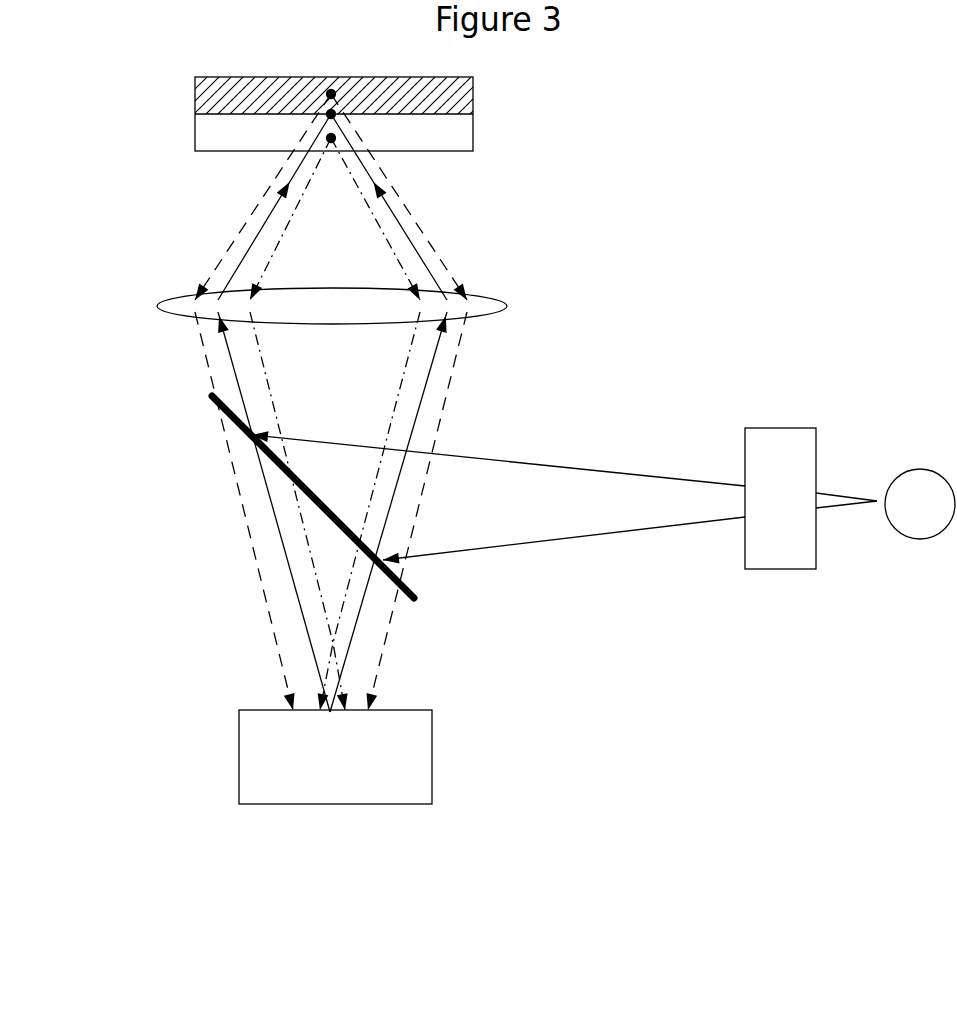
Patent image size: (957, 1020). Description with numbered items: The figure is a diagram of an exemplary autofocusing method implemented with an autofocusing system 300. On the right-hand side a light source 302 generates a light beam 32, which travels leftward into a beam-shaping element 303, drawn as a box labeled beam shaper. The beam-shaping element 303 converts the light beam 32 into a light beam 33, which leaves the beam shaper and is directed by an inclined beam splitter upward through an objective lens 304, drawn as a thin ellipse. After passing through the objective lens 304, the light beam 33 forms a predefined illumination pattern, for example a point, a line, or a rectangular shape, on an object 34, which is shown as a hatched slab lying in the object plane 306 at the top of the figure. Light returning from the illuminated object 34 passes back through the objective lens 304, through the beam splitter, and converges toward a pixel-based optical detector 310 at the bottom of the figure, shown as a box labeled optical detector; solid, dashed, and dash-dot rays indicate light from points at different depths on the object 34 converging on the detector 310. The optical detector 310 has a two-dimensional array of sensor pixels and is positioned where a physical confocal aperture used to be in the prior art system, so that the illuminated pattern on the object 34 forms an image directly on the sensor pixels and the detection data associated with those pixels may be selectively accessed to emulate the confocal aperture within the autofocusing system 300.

The autofocusing system 300 is at (796, 263).
The light source 302 is at (920, 547).
The beam-shaping element 303 is at (780, 512).
The objective lens 304 is at (274, 298).
The object plane 306 is at (180, 114).
The pixel-based optical detector 310 is at (243, 760).
The light beam 32 is at (830, 492).
The light beam 33 is at (662, 477).
The object 34 is at (473, 95).